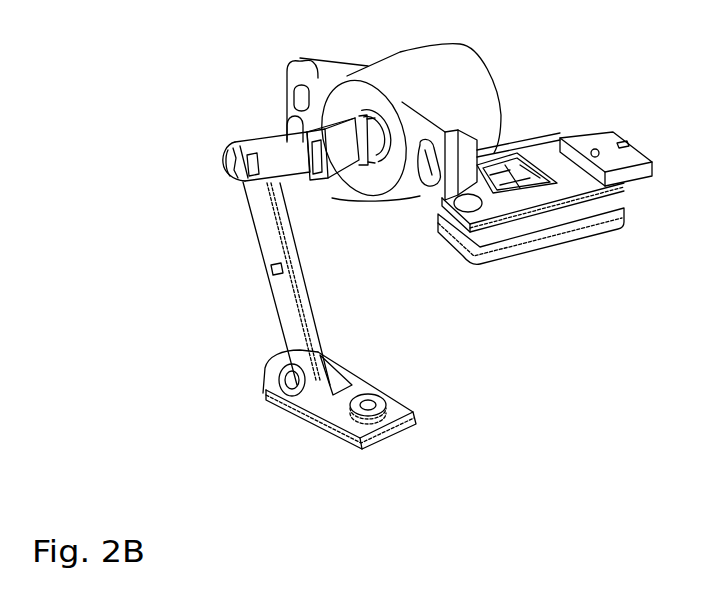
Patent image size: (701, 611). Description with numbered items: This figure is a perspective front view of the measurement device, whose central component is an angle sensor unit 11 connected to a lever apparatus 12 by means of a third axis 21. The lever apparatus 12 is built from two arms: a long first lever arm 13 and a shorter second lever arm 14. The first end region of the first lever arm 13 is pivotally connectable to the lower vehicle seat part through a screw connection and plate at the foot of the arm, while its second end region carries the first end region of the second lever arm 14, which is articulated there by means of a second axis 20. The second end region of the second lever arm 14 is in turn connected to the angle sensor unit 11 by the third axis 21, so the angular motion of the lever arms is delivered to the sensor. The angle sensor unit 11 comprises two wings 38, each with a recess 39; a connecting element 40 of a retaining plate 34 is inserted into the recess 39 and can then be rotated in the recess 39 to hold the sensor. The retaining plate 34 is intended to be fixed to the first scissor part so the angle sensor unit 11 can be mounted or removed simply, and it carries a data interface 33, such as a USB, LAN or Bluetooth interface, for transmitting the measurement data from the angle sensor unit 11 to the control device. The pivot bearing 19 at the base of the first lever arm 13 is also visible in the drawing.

The angle sensor unit 11 is at (476, 83).
The lever apparatus 12 is at (150, 248).
The first lever arm 13 is at (284, 313).
The second lever arm 14 is at (268, 148).
The pivot bearing 19 is at (289, 386).
The second axis 20 is at (224, 165).
The third axis 21 is at (366, 168).
The data interface 33 is at (633, 160).
The retaining plate 34 is at (599, 228).
The wing 38 is at (299, 62).
The recess 39 is at (297, 97).
The connecting element 40 is at (418, 187).